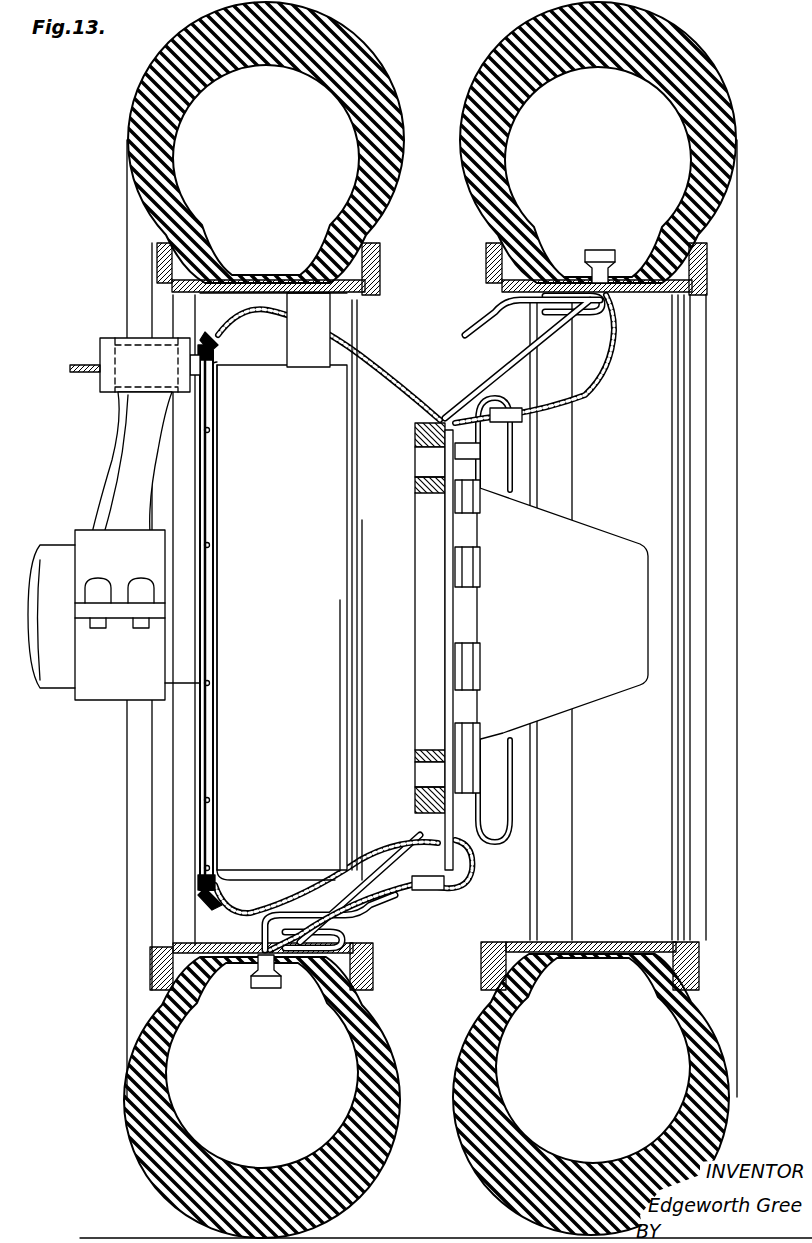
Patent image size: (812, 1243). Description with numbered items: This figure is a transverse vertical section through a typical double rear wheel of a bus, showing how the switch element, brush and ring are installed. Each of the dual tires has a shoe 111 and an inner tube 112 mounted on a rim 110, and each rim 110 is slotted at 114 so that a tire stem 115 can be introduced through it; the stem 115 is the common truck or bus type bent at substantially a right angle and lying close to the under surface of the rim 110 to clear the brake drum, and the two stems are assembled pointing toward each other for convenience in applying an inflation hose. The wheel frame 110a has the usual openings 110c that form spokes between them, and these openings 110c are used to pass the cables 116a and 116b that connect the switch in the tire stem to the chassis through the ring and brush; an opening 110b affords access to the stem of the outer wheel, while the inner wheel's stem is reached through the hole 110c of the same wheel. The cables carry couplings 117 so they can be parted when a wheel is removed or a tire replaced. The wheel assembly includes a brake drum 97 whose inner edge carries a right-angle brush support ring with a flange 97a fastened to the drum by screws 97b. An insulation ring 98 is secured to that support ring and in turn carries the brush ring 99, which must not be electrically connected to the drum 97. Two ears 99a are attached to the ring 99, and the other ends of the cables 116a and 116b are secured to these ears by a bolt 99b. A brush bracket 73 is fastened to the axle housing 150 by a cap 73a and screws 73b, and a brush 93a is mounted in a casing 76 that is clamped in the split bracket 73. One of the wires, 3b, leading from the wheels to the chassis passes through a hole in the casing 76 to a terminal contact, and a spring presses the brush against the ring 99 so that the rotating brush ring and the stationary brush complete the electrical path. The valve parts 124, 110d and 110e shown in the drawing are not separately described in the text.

The inner tube 112 is at (172, 183).
The shoe 111 is at (455, 1172).
The rim 110 is at (660, 292).
The valve stem 124 is at (612, 262).
The slot 114 is at (632, 300).
The tire stem 115 is at (560, 315).
The opening 110b is at (470, 350).
The openings 110c is at (380, 345).
The cable 116a is at (335, 365).
The cable 116b is at (580, 395).
The couplings 117 is at (508, 405).
The hub bearing 110d is at (430, 480).
The wheel frame 110a is at (520, 478).
The bolt nuts 110e is at (478, 520).
The brake drum 97 is at (281, 586).
The flange 97a is at (217, 752).
The screws 97b is at (215, 688).
The brush ring 99 is at (195, 768).
The insulation ring 98 is at (200, 808).
The ears 99a is at (214, 348).
The bolt 99b is at (205, 330).
The brush 93a is at (200, 368).
The casing 76 is at (105, 350).
The wire 3b is at (68, 368).
The brush bracket 73 is at (112, 444).
The cap 73a is at (95, 700).
The screws 73b is at (138, 582).
The axle housing 150 is at (48, 532).